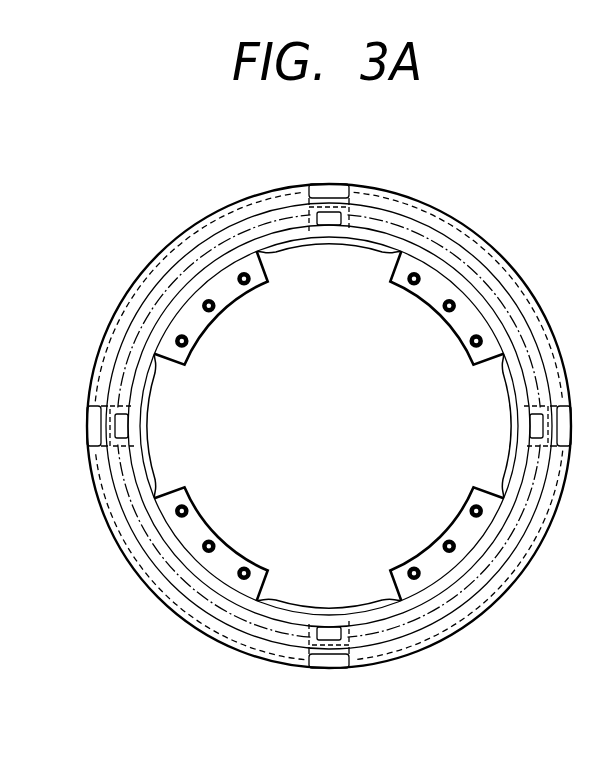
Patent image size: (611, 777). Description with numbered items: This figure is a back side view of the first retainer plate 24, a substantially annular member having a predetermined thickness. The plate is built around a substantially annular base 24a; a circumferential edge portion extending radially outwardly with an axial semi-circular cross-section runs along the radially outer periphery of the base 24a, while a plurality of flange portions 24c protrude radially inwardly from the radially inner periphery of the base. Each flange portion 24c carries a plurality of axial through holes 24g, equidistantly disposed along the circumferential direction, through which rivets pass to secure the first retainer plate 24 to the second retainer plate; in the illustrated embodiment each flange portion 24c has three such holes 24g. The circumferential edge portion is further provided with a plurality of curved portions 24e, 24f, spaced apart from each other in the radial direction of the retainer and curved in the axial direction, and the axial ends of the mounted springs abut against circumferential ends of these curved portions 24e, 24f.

The first retainer plate 24 is at (329, 395).
The annular base 24a is at (329, 424).
The flange portion 24c is at (329, 426).
The curved portion 24e is at (329, 395).
The curved portion 24f is at (329, 402).
The axial through hole 24g is at (328, 425).